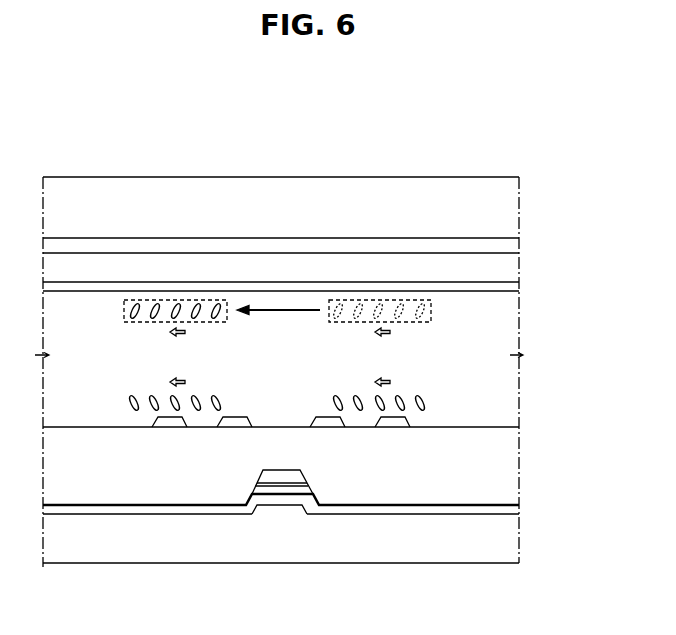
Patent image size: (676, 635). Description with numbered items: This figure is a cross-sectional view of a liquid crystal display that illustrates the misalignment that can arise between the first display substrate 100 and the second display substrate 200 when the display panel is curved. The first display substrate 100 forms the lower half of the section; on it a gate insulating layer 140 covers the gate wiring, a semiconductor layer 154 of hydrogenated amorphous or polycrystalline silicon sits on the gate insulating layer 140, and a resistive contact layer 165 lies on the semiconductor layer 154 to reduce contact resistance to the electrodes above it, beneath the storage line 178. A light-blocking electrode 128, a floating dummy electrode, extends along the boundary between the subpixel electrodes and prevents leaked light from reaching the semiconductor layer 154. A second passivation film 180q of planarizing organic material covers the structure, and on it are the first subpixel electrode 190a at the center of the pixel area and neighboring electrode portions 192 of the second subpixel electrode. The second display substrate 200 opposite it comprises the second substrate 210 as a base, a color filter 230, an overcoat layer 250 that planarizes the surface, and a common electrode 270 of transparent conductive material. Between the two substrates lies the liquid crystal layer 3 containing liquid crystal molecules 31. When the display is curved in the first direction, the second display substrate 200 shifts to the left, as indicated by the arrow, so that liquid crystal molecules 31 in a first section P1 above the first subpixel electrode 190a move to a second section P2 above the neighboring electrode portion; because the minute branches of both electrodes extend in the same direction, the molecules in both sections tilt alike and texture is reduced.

The second section P2 is at (164, 228).
The liquid crystal molecules 31 is at (176, 310).
The second substrate 210 is at (223, 196).
The color filter 230 is at (273, 246).
The overcoat layer 250 is at (325, 262).
The common electrode 270 is at (378, 290).
The first section P1 is at (430, 302).
The second display substrate 200 is at (310, 213).
The liquid crystal layer 3 is at (292, 276).
The second passivation film 180q is at (465, 440).
The storage line 178 is at (280, 476).
The pixel electrode branch 192 is at (233, 428).
The first subpixel electrode 190a is at (395, 428).
The first display substrate 100 is at (310, 493).
The semiconductor layer 154 is at (265, 512).
The light-blocking electrode 128 is at (280, 512).
The resistive contact layer 165 is at (297, 510).
The gate insulating layer 140 is at (411, 512).